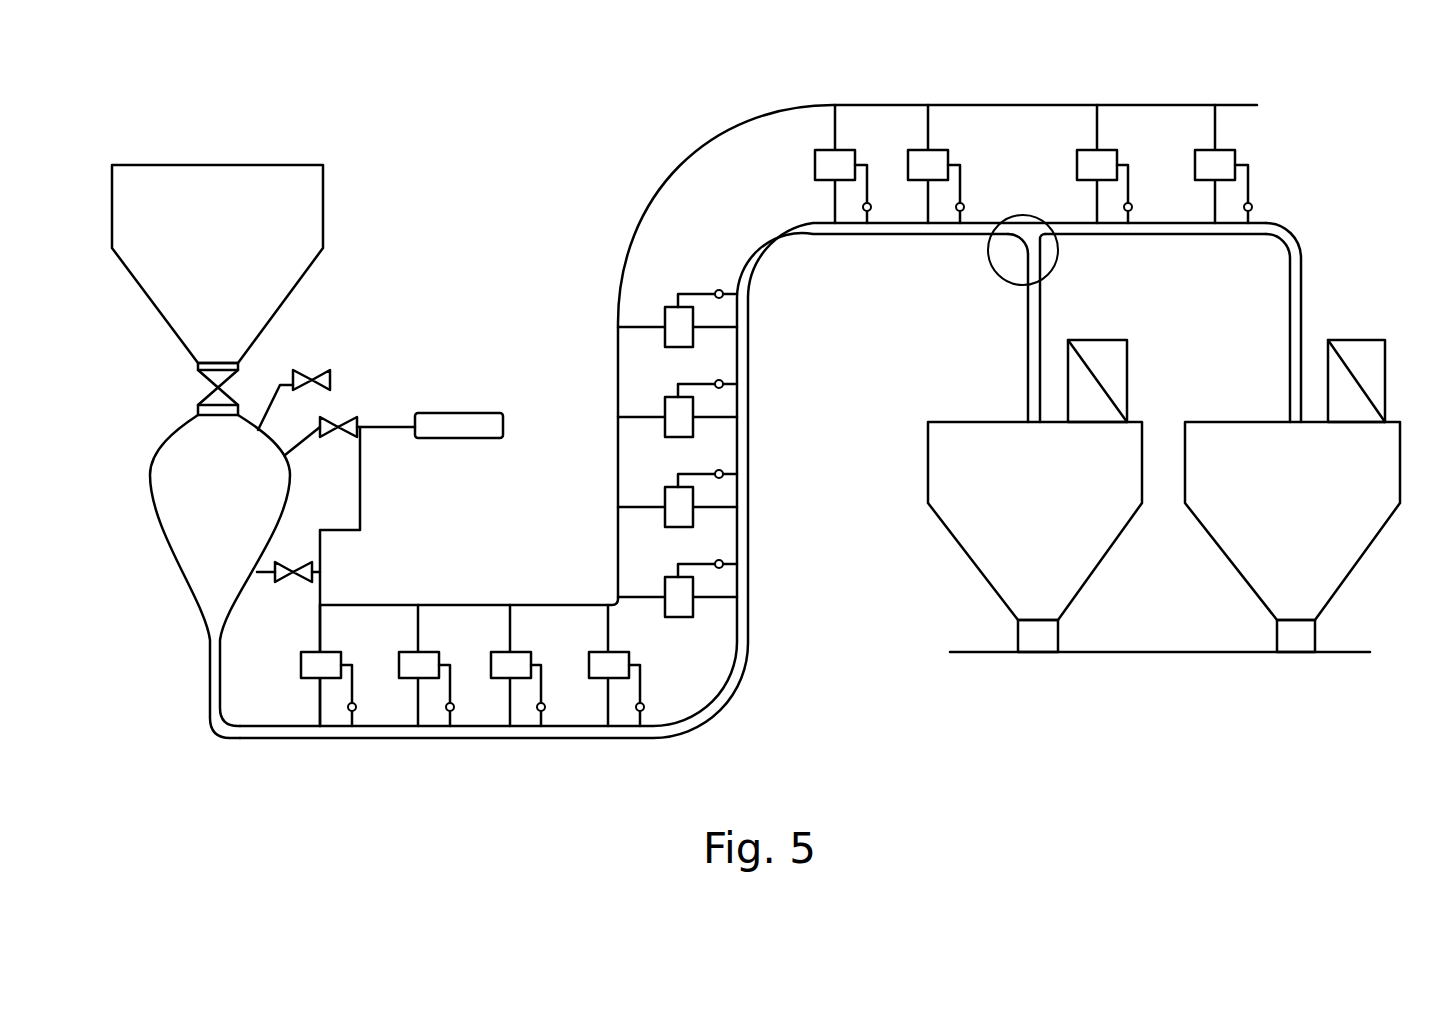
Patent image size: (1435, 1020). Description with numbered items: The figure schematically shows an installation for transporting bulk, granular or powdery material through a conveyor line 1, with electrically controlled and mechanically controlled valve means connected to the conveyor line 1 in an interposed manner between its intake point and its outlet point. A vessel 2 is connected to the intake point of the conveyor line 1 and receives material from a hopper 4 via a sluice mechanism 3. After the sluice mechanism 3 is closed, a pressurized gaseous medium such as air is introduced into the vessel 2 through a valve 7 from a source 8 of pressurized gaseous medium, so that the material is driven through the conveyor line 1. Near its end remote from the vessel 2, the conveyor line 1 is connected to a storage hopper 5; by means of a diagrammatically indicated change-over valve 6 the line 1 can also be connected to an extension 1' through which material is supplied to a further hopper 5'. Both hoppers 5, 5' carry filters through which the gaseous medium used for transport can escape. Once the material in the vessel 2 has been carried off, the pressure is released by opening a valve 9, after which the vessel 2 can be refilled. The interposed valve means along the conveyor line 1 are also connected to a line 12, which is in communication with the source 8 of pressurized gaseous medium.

The conveyor line 1 is at (753, 480).
The extension of the line 1' is at (1302, 317).
The vessel 2 is at (183, 527).
The sluice mechanism 3 is at (210, 385).
The hopper 4 is at (297, 229).
The storage vessel or hopper 5 is at (1027, 537).
The further hopper 5' is at (1285, 537).
The change-over valve 6 is at (1040, 213).
The valve 7 is at (345, 424).
The source of pressurized gaseous medium 8 is at (467, 422).
The valve 9 is at (318, 369).
The line 12 is at (487, 603).